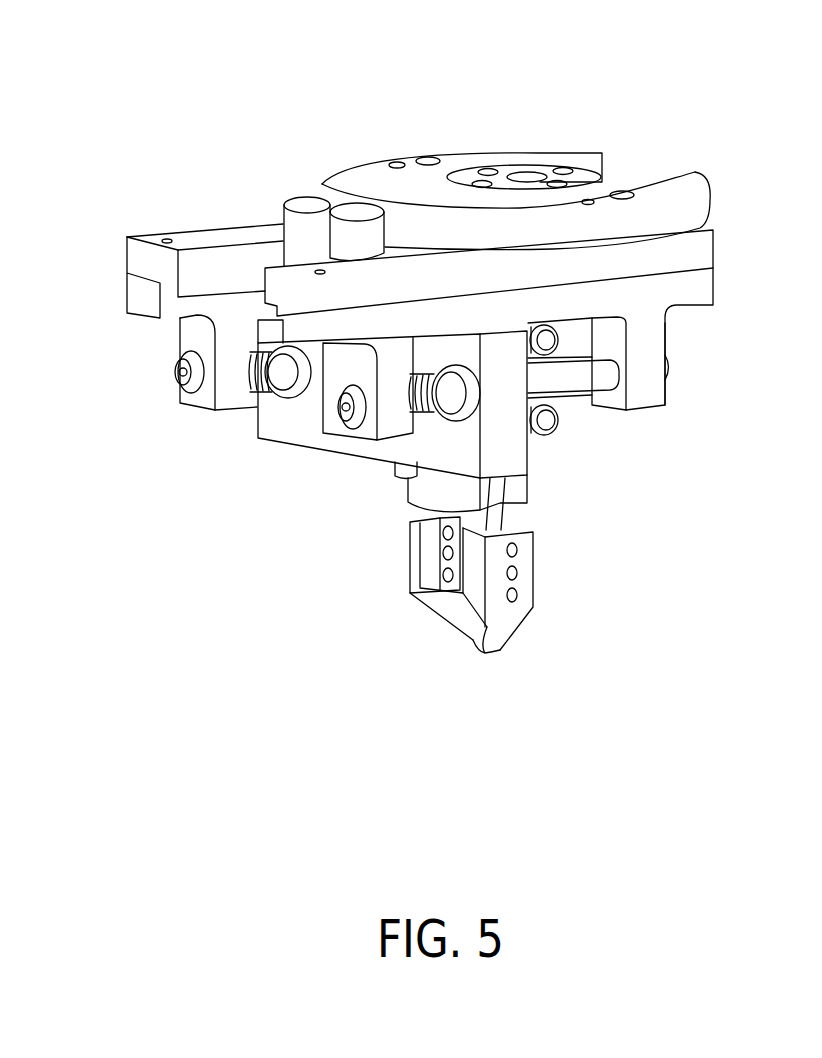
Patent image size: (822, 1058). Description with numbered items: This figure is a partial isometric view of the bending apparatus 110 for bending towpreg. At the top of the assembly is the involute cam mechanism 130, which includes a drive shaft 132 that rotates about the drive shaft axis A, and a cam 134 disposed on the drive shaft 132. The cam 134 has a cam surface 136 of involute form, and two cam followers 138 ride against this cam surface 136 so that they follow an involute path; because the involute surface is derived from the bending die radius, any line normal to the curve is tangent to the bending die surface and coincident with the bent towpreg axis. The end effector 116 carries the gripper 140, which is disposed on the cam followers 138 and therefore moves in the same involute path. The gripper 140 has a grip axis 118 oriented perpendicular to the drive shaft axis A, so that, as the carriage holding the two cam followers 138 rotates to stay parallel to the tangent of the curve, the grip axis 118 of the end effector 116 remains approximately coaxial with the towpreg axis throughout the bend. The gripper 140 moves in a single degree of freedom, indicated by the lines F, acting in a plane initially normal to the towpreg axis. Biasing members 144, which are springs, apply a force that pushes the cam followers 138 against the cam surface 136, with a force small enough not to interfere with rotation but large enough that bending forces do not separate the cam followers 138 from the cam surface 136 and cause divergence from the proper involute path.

The bending apparatus 110 is at (658, 113).
The end effector 116 is at (410, 547).
The grip axis 118 is at (493, 648).
The involute cam mechanism 130 is at (673, 185).
The drive shaft 132 is at (809, 639).
The cam 134 is at (372, 173).
The cam surface 136 is at (683, 210).
The cam followers 138 is at (344, 229).
The gripper 140 is at (520, 576).
The biasing members 144 is at (743, 358).
The drive shaft axis A is at (522, 175).
The lines F-- F is at (821, 484).